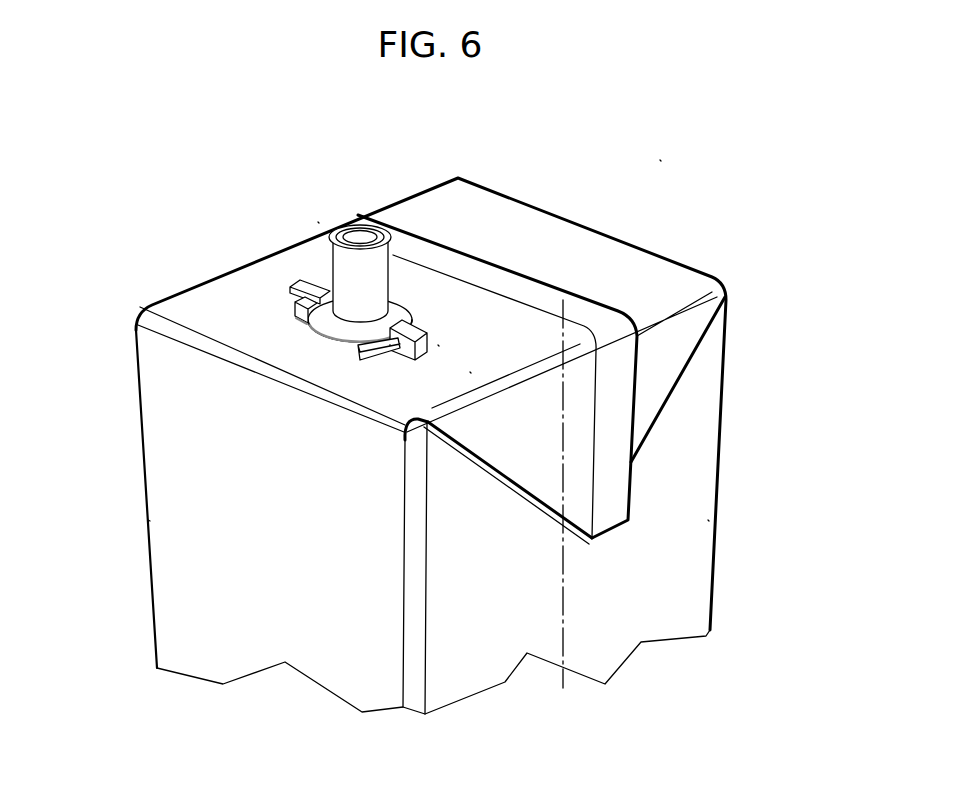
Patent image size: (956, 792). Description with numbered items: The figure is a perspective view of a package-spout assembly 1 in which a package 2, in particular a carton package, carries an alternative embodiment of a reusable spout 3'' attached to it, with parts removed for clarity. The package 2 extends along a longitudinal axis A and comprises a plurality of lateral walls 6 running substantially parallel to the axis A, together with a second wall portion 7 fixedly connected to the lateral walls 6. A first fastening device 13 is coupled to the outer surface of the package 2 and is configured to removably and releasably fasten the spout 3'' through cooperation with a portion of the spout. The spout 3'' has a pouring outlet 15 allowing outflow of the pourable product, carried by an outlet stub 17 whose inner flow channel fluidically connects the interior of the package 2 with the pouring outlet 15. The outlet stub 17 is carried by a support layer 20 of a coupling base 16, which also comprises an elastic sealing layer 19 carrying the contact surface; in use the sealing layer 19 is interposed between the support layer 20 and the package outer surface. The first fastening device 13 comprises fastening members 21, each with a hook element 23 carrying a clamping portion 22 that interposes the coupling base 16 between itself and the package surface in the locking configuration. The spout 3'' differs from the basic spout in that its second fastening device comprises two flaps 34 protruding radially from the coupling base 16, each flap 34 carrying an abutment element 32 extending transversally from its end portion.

The package-spout assembly 1 is at (664, 158).
The package 2 is at (612, 217).
The spout 3'' is at (296, 169).
The lateral walls 6 is at (170, 447).
The second wall portion 7 is at (497, 205).
The first fastening device 13 is at (466, 370).
The pouring outlet 15 is at (377, 228).
The coupling base 16 is at (313, 371).
The outlet stub 17 is at (357, 232).
The sealing layer 19 is at (341, 371).
The support layer 20 is at (342, 333).
The fastening member 21 is at (366, 331).
The clamping portion 22 is at (303, 283).
The hook element 23 is at (441, 344).
The abutment element 32 is at (295, 316).
The flap 34 is at (376, 355).
The longitudinal axis A is at (561, 563).